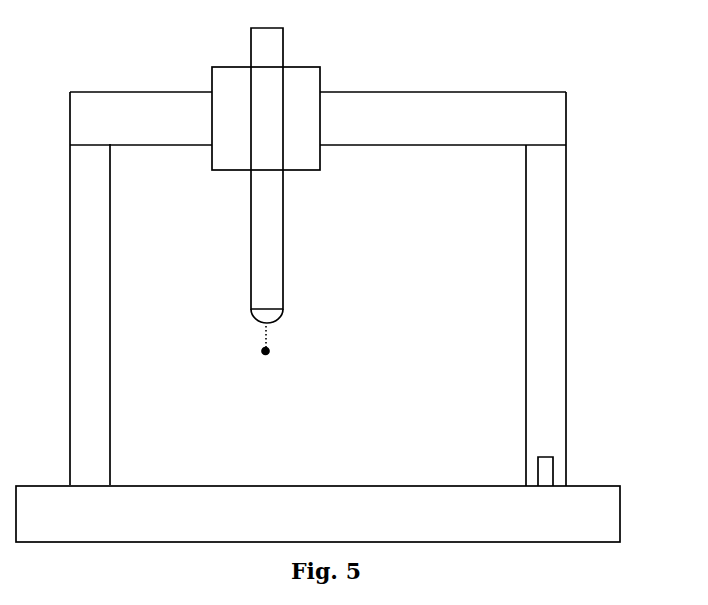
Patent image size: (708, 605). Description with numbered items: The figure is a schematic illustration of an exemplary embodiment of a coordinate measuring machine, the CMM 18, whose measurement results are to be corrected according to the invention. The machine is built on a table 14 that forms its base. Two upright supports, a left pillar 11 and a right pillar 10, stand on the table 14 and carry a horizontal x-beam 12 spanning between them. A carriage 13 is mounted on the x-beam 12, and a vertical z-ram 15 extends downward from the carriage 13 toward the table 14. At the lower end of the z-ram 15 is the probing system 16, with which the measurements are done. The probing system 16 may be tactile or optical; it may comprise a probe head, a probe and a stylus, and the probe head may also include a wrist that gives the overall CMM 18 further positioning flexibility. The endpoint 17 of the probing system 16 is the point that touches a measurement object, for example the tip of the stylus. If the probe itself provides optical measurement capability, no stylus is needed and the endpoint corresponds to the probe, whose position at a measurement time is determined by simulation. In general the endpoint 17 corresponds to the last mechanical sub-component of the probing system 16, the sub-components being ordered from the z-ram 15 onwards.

The right pillar 10 is at (369, 271).
The left pillar 11 is at (110, 451).
The x-beam 12 is at (412, 91).
The carriage 13 is at (294, 87).
The table 14 is at (325, 486).
The z-ram 15 is at (283, 245).
The probing system 16 is at (279, 335).
The endpoint 17 is at (268, 353).
The CMM 18 is at (538, 91).